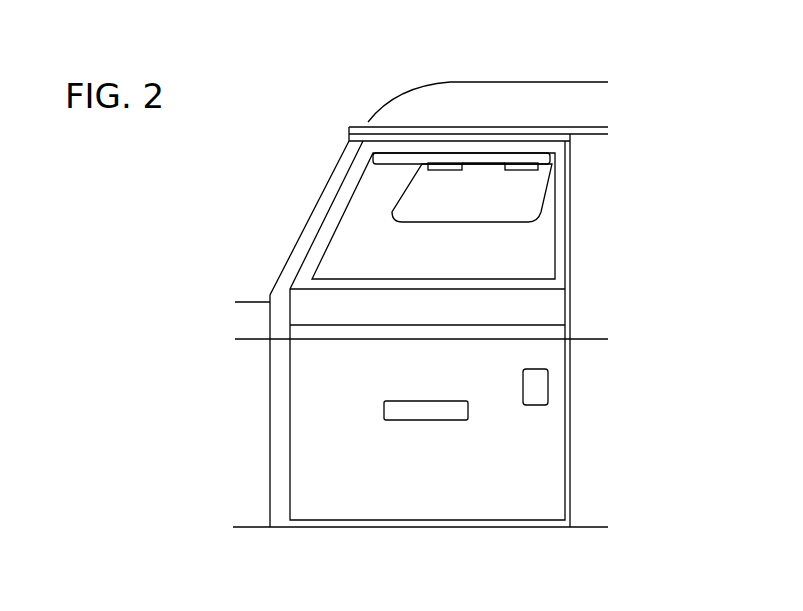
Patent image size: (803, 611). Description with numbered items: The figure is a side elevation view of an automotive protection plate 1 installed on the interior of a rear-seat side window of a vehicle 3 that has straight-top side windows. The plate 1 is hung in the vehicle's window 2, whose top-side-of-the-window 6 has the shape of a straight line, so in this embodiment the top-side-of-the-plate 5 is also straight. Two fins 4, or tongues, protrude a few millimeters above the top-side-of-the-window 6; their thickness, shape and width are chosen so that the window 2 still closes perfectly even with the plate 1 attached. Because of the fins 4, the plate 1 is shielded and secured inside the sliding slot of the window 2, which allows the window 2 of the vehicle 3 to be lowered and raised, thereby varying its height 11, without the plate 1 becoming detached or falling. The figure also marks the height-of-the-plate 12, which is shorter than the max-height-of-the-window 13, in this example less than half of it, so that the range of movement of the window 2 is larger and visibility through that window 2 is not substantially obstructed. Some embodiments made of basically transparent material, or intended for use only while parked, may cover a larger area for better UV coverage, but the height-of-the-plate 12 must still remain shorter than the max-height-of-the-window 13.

The automotive protection plate 1 is at (523, 198).
The window 2 is at (537, 262).
The vehicle 3 is at (285, 317).
The fins 4 is at (437, 166).
The top-side-of-the-plate 5 is at (486, 158).
The top-side-of-the-window 6 is at (394, 158).
The height 11 is at (378, 170).
The height-of-the-plate 12 is at (495, 164).
The max-height-of-the-window 13 is at (387, 157).